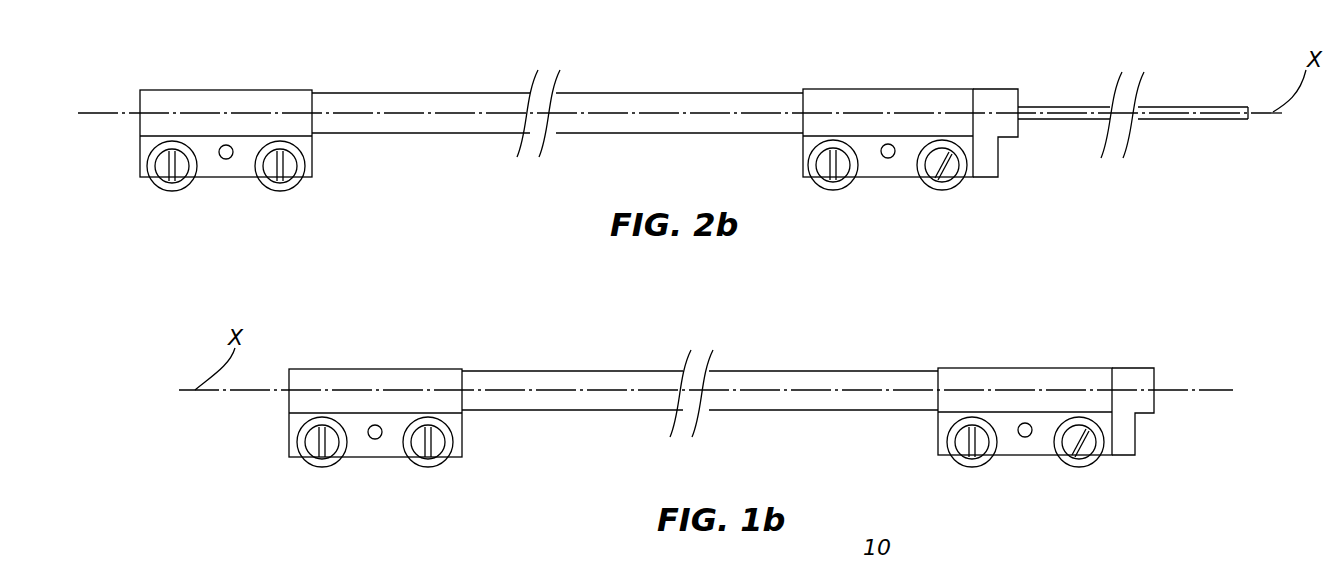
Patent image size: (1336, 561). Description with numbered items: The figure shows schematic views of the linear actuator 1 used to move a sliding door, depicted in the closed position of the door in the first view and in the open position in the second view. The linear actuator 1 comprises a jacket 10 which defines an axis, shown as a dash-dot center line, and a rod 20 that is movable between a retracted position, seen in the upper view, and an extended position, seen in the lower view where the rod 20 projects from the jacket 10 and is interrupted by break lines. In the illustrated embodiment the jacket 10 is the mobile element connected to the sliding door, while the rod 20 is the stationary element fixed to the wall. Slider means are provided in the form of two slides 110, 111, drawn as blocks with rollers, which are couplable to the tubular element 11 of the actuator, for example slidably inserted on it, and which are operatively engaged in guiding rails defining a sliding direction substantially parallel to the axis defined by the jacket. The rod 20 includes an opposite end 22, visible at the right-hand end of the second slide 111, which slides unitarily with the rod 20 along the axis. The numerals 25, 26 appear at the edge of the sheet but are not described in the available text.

In FIG. 2b, the linear actuator 1 is at (352, 216).
In FIG. 1b, the linear actuator 1 is at (1060, 306).
In FIG. 2b, the jacket 10 is at (416, 84).
In FIG. 1b, the jacket 10 is at (545, 353).
In FIG. 2b, the tubular element 11 is at (640, 93).
In FIG. 1b, the tubular element 11 is at (770, 371).
In FIG. 2b, the slide 110 is at (218, 103).
In FIG. 1b, the slide 110 is at (368, 380).
In FIG. 2b, the slide 111 is at (915, 105).
In FIG. 1b, the slide 111 is at (972, 375).
In FIG. 2b, the rod 20 is at (1202, 92).
In FIG. 1b, the opposite end 22 is at (1155, 390).
In FIG. 1b, the component 25 is at (474, 550).
In FIG. 1b, the component 26 is at (526, 550).